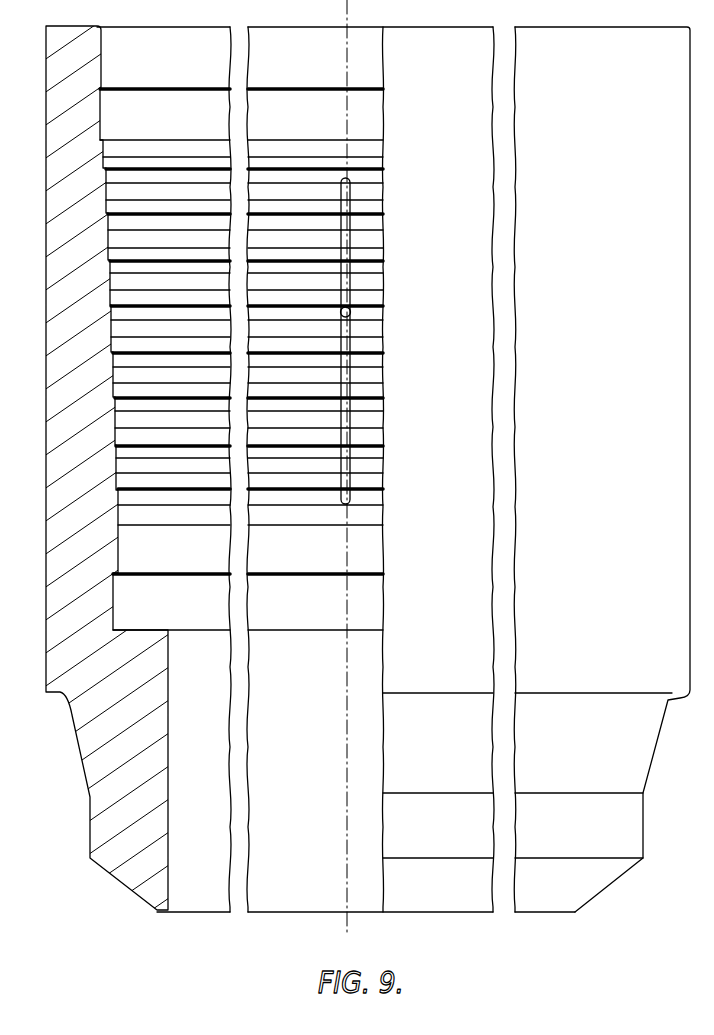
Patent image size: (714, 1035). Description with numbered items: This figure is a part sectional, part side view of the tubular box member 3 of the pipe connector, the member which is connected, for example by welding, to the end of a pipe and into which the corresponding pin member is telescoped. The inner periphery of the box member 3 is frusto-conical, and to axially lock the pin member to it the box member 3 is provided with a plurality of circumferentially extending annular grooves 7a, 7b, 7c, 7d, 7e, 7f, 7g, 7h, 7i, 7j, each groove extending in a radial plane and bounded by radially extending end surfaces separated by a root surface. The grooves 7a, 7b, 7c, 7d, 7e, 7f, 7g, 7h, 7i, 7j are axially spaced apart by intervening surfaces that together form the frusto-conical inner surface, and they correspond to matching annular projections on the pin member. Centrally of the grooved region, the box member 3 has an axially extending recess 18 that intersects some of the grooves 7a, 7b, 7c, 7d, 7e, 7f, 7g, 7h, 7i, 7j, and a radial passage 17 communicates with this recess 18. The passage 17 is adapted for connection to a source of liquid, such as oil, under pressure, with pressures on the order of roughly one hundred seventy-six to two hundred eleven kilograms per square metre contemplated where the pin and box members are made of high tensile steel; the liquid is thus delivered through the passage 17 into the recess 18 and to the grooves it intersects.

The box member 3 is at (58, 545).
The annular groove 7a is at (112, 600).
The annular groove 7b is at (118, 492).
The annular groove 7c is at (116, 448).
The annular groove 7d is at (115, 401).
The annular groove 7e is at (113, 356).
The annular groove 7f is at (112, 310).
The annular groove 7g is at (110, 265).
The annular groove 7h is at (110, 216).
The annular groove 7i is at (106, 172).
The annular groove 7j is at (110, 112).
The radial passage 17 is at (352, 313).
The axially extending recess 18 is at (351, 244).